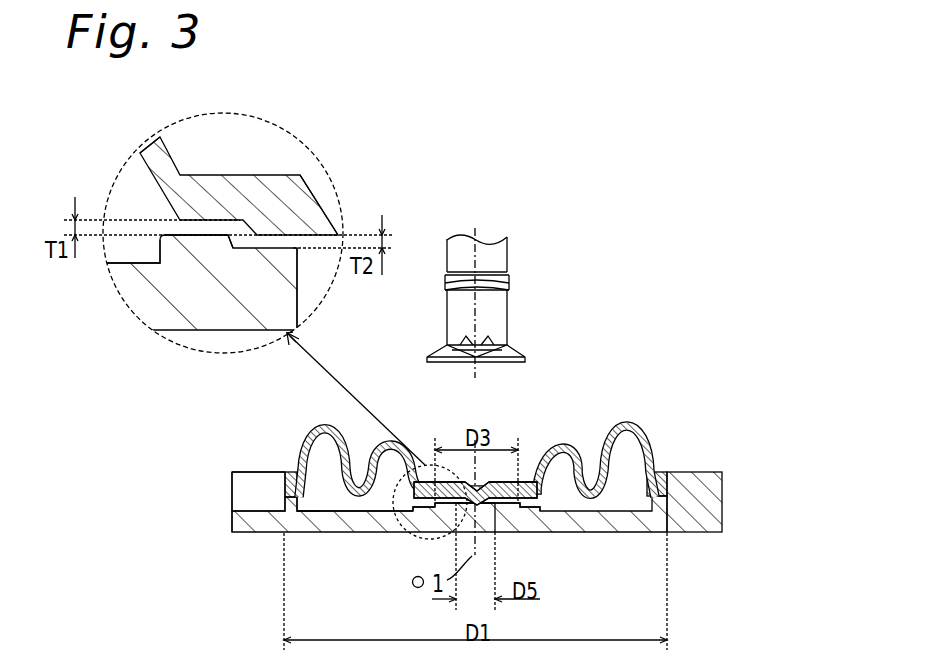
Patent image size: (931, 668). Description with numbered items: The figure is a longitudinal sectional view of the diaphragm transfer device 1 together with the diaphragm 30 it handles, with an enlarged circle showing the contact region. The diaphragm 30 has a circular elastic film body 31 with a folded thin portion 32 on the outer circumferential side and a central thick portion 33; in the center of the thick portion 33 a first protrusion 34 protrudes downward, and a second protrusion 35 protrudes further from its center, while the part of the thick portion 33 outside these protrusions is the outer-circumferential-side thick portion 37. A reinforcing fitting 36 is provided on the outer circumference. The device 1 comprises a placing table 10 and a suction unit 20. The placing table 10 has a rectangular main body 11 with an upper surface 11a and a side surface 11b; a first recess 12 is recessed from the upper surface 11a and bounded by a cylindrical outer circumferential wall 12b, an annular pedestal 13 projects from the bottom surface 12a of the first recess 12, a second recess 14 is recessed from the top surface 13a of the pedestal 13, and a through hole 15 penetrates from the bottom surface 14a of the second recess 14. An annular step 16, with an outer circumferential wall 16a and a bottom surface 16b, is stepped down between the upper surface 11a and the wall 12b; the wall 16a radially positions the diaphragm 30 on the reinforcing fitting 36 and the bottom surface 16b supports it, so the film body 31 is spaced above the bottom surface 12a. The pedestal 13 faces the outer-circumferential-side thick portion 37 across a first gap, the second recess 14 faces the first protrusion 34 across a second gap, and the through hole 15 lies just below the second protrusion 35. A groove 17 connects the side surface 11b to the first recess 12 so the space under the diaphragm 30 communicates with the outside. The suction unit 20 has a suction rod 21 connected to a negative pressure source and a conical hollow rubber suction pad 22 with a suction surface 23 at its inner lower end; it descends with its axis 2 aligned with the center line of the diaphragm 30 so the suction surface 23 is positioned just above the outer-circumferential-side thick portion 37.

The diaphragm transfer device 1 is at (628, 247).
The axis 2 is at (477, 230).
The placing table 10 is at (207, 468).
The main body 11 is at (236, 534).
The upper surface 11a is at (262, 470).
The side surface 11b is at (231, 495).
The first recess 12 is at (335, 502).
The bottom surface 12a is at (410, 509).
The outer circumferential wall 12b is at (310, 510).
The pedestal 13 is at (540, 533).
The top surface 13a is at (186, 238).
The second recess 14 is at (480, 478).
The bottom surface 14a is at (257, 249).
The through hole 15 is at (488, 534).
The step 16 is at (694, 460).
The outer circumferential wall 16a is at (664, 470).
The bottom surface 16b is at (671, 448).
The groove 17 is at (270, 502).
The suction unit 20 is at (588, 257).
The suction rod 21 is at (502, 306).
The suction pad 22 is at (514, 350).
The suction surface 23 is at (436, 363).
The diaphragm 30 is at (615, 426).
The film body 31 is at (580, 393).
The thin portion 32 is at (571, 450).
The thick portion 33 is at (524, 481).
The first protrusion 34 is at (277, 212).
The second protrusion 35 is at (334, 233).
The reinforcing fitting 36 is at (294, 470).
The outer-circumferential-side thick portion 37 is at (197, 188).